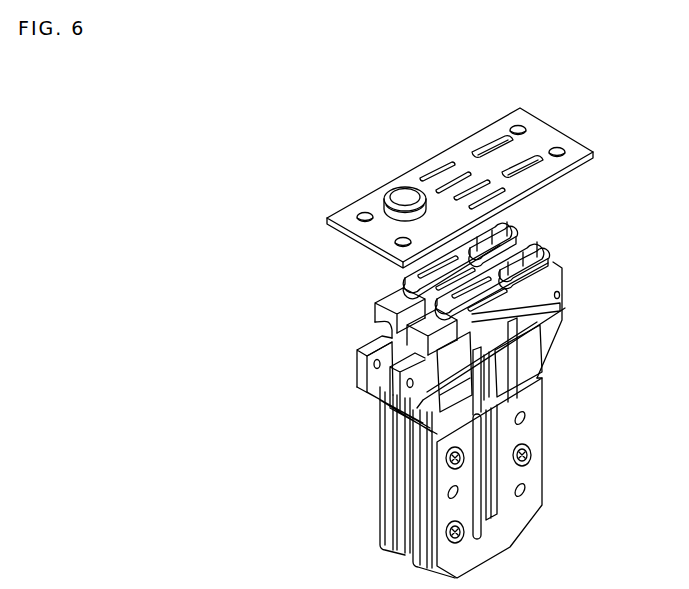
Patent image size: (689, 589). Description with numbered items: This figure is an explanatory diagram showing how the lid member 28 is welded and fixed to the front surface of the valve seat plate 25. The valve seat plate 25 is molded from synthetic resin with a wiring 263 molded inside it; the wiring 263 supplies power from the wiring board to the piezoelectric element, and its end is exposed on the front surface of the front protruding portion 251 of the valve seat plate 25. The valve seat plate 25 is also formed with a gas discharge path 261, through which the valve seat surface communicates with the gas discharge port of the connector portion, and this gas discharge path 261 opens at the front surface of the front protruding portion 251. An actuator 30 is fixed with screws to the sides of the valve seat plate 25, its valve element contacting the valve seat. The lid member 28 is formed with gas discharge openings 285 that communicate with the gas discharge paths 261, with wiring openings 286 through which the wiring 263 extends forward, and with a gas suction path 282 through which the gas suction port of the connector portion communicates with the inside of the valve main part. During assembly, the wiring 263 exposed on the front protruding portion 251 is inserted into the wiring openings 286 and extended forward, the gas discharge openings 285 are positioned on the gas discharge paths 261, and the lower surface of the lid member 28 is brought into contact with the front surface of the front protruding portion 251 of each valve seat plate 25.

The lid member 28 is at (551, 137).
The gas suction path 282 is at (403, 196).
The gas discharge opening 285 is at (435, 171).
The wiring opening 286 is at (490, 152).
The front protruding portion 251 is at (403, 287).
The wiring 263 is at (539, 243).
The gas discharge path 261 is at (540, 283).
The valve seat plate 25 is at (362, 360).
The actuator 30 is at (530, 433).